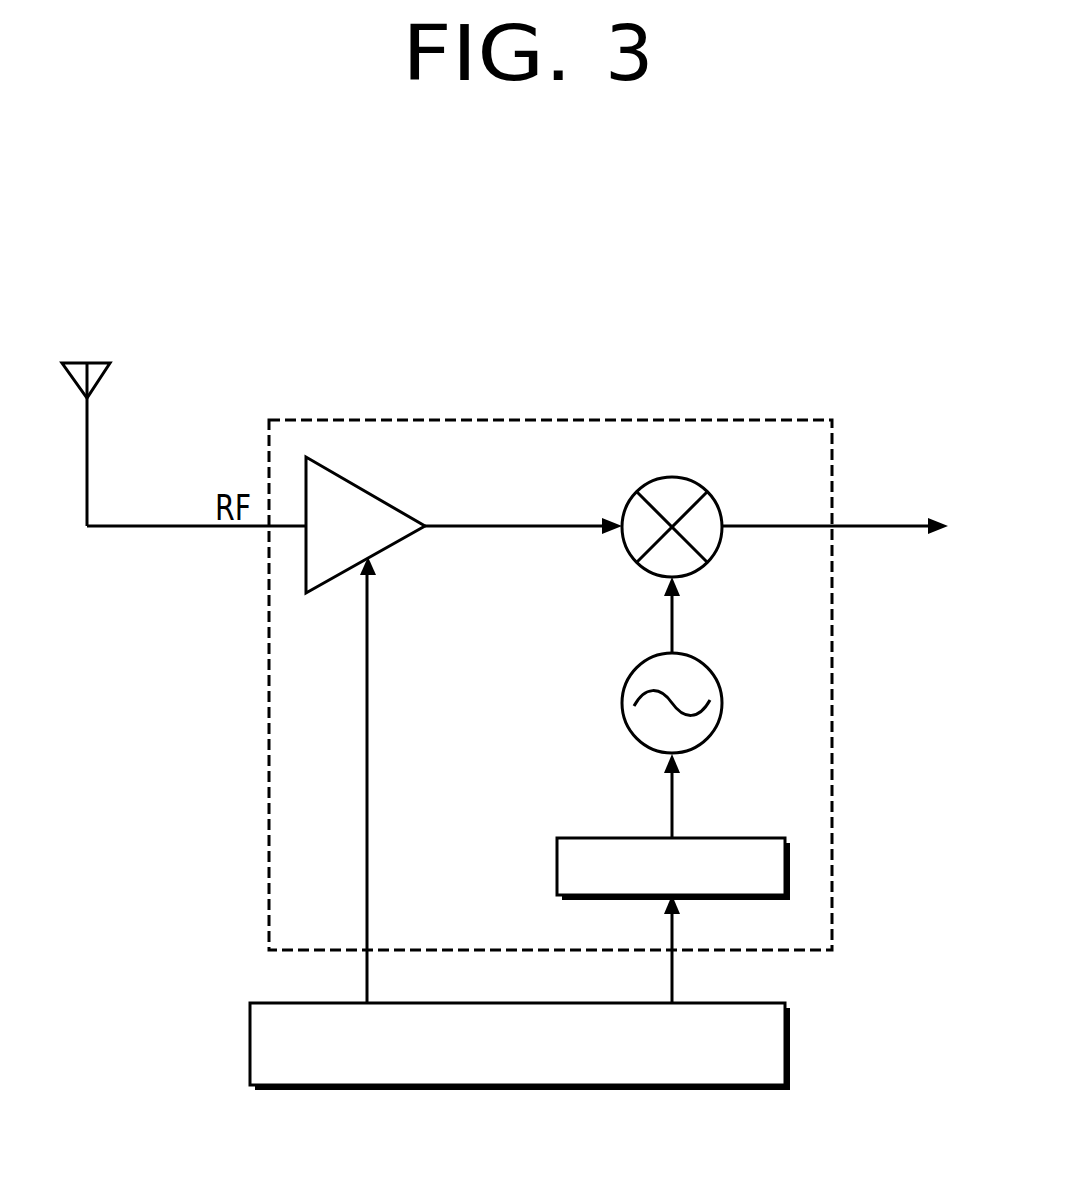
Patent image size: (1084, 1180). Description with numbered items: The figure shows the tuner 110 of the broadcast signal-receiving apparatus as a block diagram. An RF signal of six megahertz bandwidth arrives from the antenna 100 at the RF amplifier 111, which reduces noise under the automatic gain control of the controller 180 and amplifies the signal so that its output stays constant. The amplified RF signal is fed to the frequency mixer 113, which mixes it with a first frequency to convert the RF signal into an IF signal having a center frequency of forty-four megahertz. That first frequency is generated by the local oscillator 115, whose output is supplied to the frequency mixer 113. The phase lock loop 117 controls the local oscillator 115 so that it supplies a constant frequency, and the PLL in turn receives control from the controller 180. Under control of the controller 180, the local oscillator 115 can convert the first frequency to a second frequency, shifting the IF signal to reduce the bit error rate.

The antenna 100 is at (87, 360).
The tuner 110 is at (543, 420).
The RF amplifier 111 is at (372, 494).
The frequency mixer 113 is at (707, 488).
The local oscillator 115 is at (712, 672).
The phase lock loop 117 is at (727, 838).
The controller 180 is at (520, 1088).